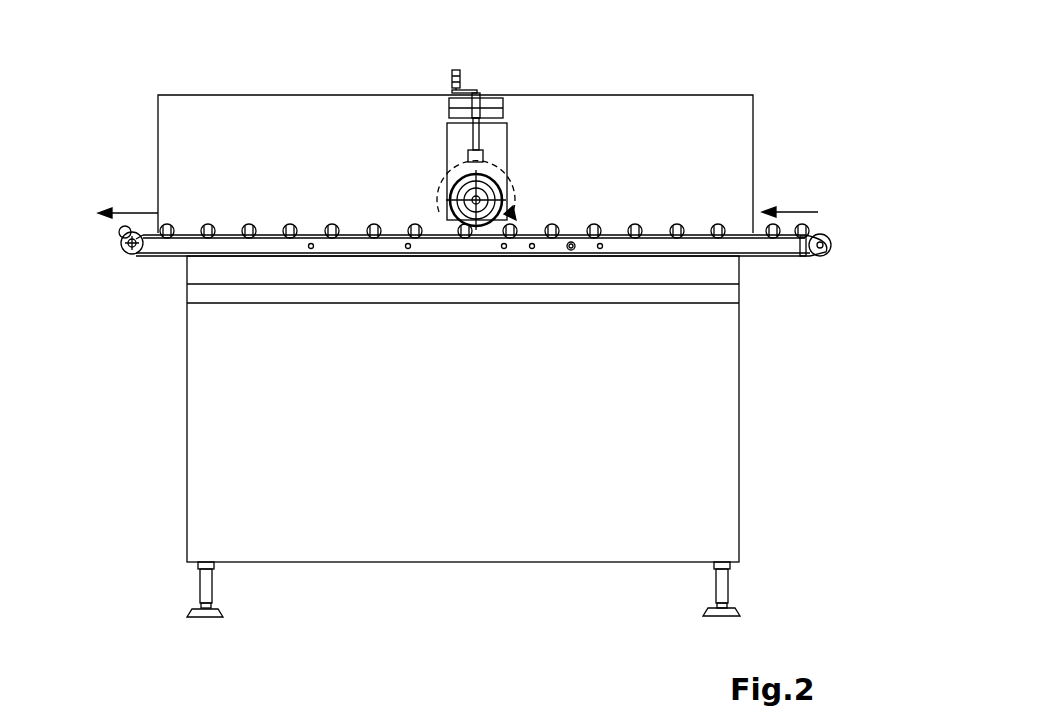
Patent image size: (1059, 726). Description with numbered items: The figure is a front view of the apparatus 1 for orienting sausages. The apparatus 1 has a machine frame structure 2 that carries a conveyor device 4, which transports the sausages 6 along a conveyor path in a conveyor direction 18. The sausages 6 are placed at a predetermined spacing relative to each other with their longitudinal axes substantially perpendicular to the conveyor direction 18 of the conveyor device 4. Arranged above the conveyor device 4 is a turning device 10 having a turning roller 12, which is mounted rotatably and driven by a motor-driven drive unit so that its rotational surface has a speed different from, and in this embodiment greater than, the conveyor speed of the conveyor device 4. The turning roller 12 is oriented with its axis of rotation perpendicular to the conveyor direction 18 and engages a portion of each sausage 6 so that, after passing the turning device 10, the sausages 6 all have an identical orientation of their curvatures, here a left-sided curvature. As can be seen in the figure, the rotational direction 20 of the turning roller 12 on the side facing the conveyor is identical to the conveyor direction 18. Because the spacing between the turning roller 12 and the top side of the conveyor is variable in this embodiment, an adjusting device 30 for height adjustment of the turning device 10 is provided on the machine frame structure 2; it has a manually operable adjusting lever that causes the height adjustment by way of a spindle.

The apparatus 1 is at (122, 610).
The machine frame structure 2 is at (725, 512).
The conveyor device 4 is at (163, 262).
The sausages 6 is at (210, 230).
The turning device 10 is at (430, 158).
The turning roller 12 is at (460, 188).
The conveyor direction 18 is at (795, 207).
The rotational direction 20 is at (510, 180).
The adjusting device 30 is at (510, 110).